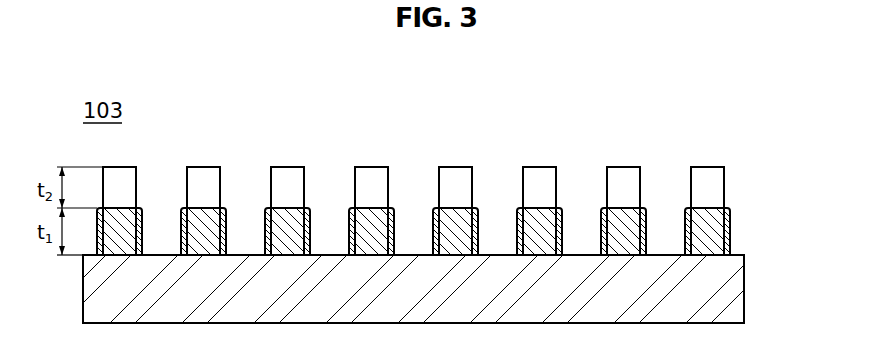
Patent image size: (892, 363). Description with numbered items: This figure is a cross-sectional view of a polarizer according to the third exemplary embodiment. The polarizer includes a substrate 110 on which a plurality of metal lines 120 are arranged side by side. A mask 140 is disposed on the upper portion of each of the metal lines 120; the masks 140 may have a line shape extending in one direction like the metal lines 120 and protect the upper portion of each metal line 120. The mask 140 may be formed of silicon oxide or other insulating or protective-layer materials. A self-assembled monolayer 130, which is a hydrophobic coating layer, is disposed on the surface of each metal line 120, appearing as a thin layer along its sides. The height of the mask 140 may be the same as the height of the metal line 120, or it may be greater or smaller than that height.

The substrate 110 is at (728, 287).
The metal line 120 is at (708, 222).
The self-assembled monolayer 130 is at (730, 240).
The mask 140 is at (710, 183).